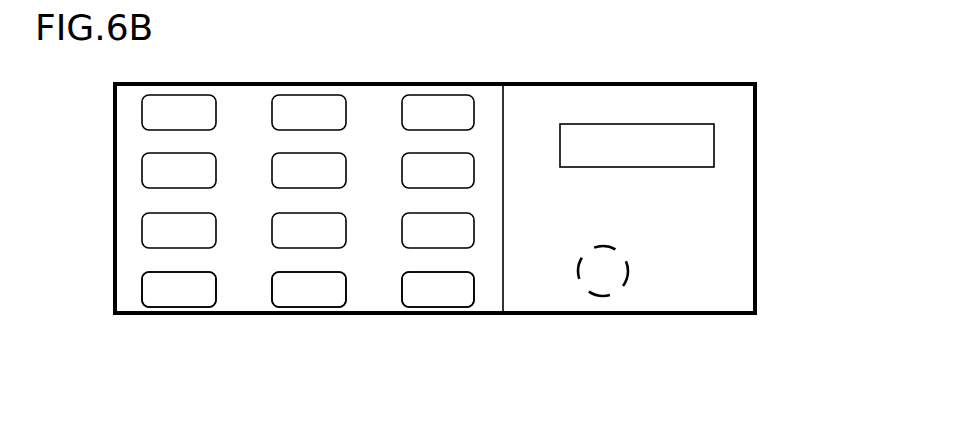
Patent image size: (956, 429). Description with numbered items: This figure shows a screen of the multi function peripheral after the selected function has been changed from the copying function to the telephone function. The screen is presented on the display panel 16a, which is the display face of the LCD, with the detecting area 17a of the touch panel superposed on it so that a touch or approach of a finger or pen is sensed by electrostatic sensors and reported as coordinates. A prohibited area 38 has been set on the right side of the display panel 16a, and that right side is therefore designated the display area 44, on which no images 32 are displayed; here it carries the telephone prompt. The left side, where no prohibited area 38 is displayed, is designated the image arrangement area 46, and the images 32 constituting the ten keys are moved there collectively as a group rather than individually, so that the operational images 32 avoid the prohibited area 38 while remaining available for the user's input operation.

The display panel 16a is at (758, 93).
The detecting area 17a is at (758, 93).
The image arrangement area 46 is at (497, 74).
The images 32 is at (415, 300).
The display area 44 is at (750, 74).
The prohibited area 38 is at (628, 281).